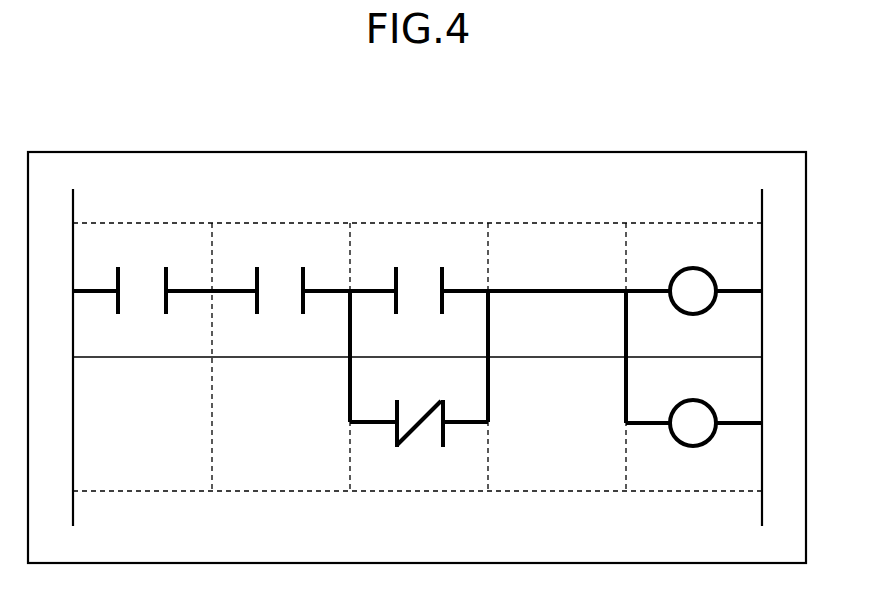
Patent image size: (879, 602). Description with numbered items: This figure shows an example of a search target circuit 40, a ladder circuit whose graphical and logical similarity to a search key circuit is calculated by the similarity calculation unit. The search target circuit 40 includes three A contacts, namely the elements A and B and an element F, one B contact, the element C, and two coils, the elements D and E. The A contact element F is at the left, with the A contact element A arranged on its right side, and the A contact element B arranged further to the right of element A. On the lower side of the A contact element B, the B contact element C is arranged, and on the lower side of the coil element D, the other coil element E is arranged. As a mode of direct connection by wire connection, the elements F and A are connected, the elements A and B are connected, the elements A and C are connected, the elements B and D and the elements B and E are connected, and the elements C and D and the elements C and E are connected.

The search target circuit 40 is at (417, 341).
The element F (A contact) F is at (142, 275).
The element A (A contact) A is at (280, 275).
The element B (A contact) B is at (419, 275).
The element C (B contact) C is at (420, 410).
The element D (coil) D is at (693, 275).
The element E (coil) E is at (693, 409).